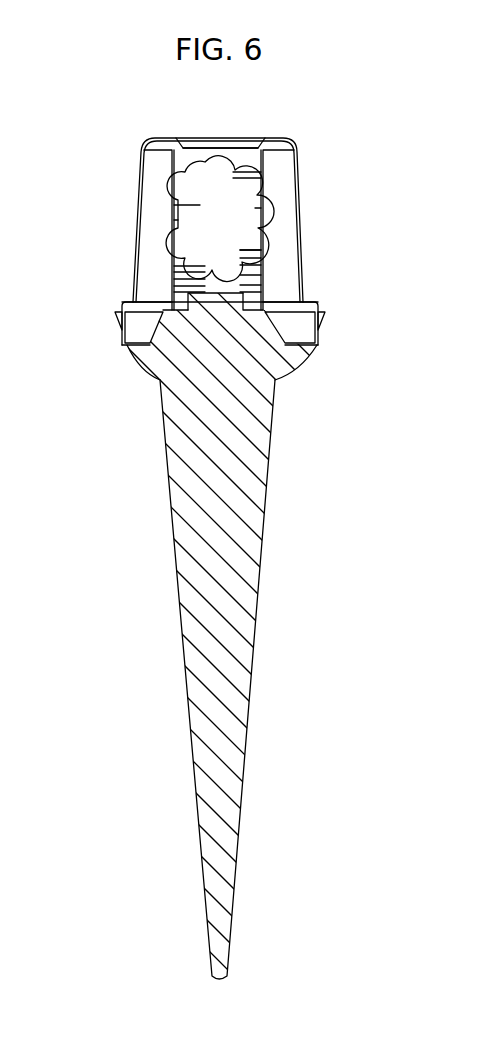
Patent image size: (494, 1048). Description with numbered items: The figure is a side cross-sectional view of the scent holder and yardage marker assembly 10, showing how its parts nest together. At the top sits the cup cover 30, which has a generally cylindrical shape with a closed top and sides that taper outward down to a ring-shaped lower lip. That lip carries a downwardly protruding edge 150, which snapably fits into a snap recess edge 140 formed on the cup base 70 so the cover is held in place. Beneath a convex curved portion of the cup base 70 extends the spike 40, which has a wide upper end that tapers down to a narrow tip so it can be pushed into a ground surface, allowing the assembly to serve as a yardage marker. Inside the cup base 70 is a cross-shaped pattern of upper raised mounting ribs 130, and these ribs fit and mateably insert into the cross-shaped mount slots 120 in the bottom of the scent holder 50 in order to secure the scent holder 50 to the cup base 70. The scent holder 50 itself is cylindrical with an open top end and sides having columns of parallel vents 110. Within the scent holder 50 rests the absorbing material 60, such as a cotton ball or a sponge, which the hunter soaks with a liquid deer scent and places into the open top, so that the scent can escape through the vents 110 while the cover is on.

The scent holder and yardage marker assembly 10 is at (2, 138).
The cup cover 30 is at (179, 224).
The spike 40 is at (247, 524).
The scent holder 50 is at (244, 118).
The absorbing material 60 is at (195, 191).
The cup base 70 is at (246, 353).
The vents 110 is at (222, 232).
The mount slots 120 is at (306, 284).
The upper raised mounting ribs 130 is at (298, 248).
The snap recess edge 140 is at (175, 323).
The downwardly protruding edge 150 is at (174, 357).